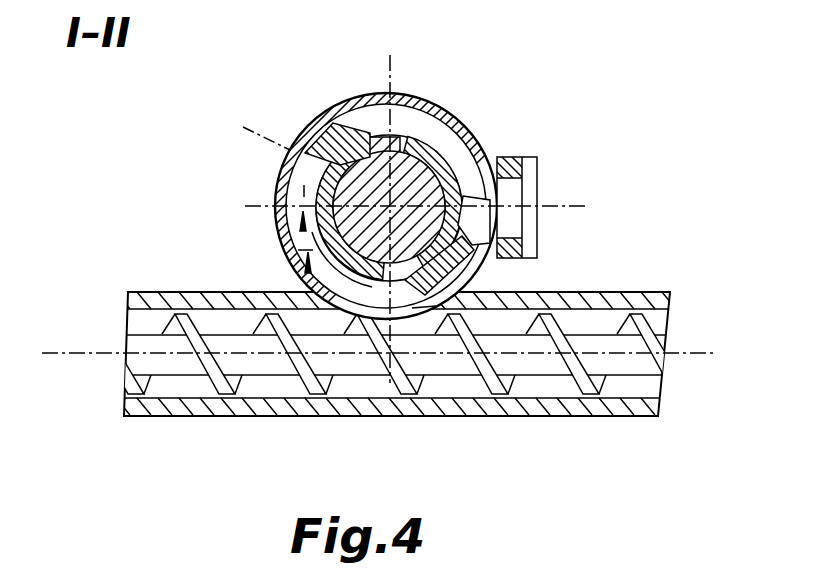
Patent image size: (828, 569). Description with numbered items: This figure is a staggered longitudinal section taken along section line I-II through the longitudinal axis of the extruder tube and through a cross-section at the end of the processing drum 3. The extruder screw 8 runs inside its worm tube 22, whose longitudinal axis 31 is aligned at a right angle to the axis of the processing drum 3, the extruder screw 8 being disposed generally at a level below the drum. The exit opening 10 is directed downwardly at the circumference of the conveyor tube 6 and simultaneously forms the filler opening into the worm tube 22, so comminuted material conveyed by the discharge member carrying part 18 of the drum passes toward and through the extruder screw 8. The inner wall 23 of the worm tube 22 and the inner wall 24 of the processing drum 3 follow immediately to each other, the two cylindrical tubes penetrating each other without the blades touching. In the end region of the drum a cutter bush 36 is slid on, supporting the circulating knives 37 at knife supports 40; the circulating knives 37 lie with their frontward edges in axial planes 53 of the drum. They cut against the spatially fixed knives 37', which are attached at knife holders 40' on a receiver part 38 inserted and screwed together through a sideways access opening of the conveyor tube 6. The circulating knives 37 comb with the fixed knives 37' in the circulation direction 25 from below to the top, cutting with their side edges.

The processing drum 3 is at (381, 134).
The conveyor tube 6 is at (440, 100).
The extruder screw 8 is at (630, 342).
The exit opening 10 is at (424, 314).
The discharge member carrying part 18 is at (423, 176).
The worm tube 22 is at (565, 300).
The inner wall of the worm tube 23 is at (328, 314).
The inner wall of the processing drum 24 is at (283, 248).
The circulation direction 25 is at (303, 190).
The longitudinal axis of the worm tube 31 is at (538, 358).
The cutter bush 36 is at (365, 145).
The circulating knives 37 is at (397, 187).
The spatially fixed knives 37' is at (397, 207).
The receiver part 38 is at (540, 167).
The knife supports 40 is at (397, 167).
The knife holders 40' is at (397, 207).
The axial planes 53 is at (243, 127).